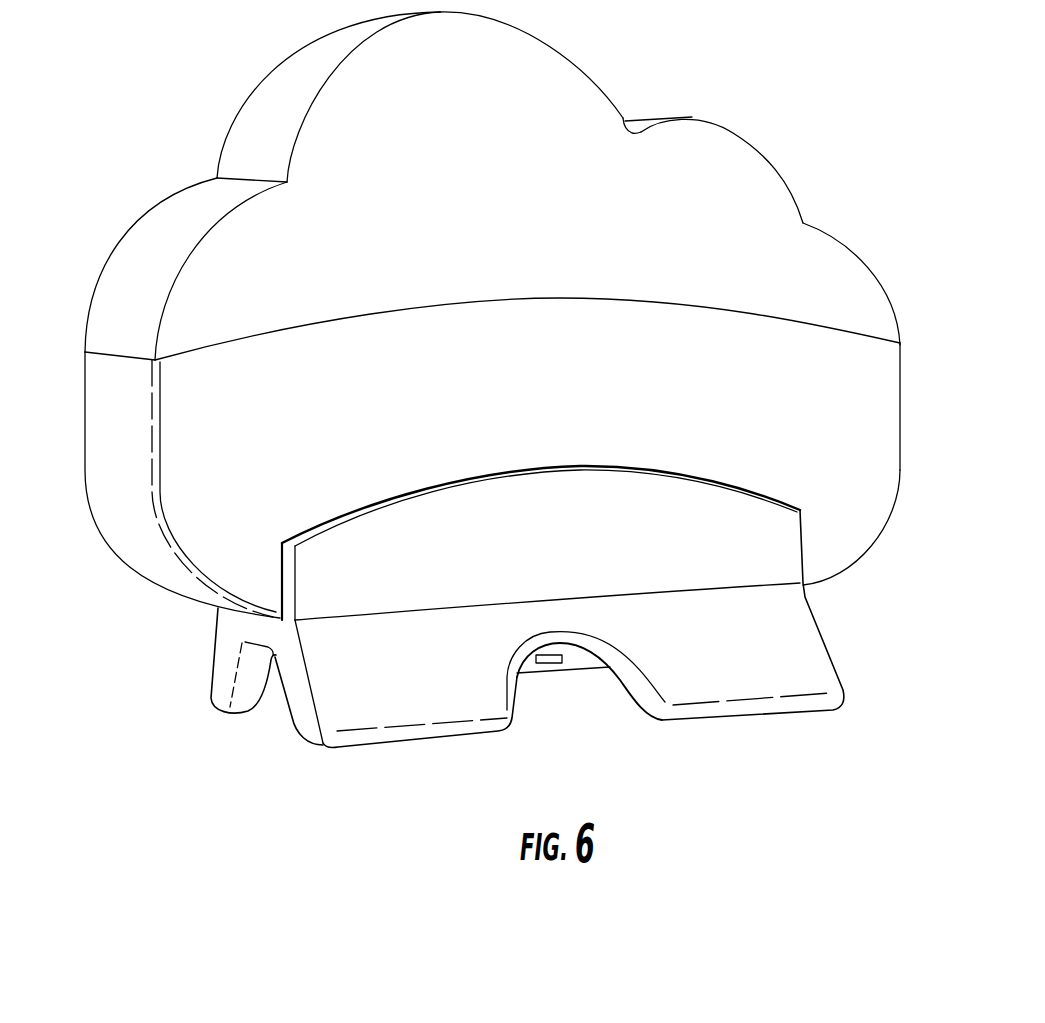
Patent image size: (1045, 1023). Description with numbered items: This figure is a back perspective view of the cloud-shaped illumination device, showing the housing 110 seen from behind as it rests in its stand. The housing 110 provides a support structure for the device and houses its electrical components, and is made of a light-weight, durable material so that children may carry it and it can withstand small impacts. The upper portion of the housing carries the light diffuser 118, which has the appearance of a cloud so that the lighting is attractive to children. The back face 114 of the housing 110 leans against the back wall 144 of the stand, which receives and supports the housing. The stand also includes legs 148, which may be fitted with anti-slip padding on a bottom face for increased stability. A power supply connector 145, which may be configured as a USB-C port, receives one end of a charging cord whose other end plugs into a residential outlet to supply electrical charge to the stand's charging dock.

The housing 110 is at (110, 402).
The back face 114 is at (577, 367).
The light diffuser 118 is at (793, 258).
The back wall 144 is at (720, 535).
The power supply connector 145 is at (552, 661).
The legs 148 is at (303, 720).